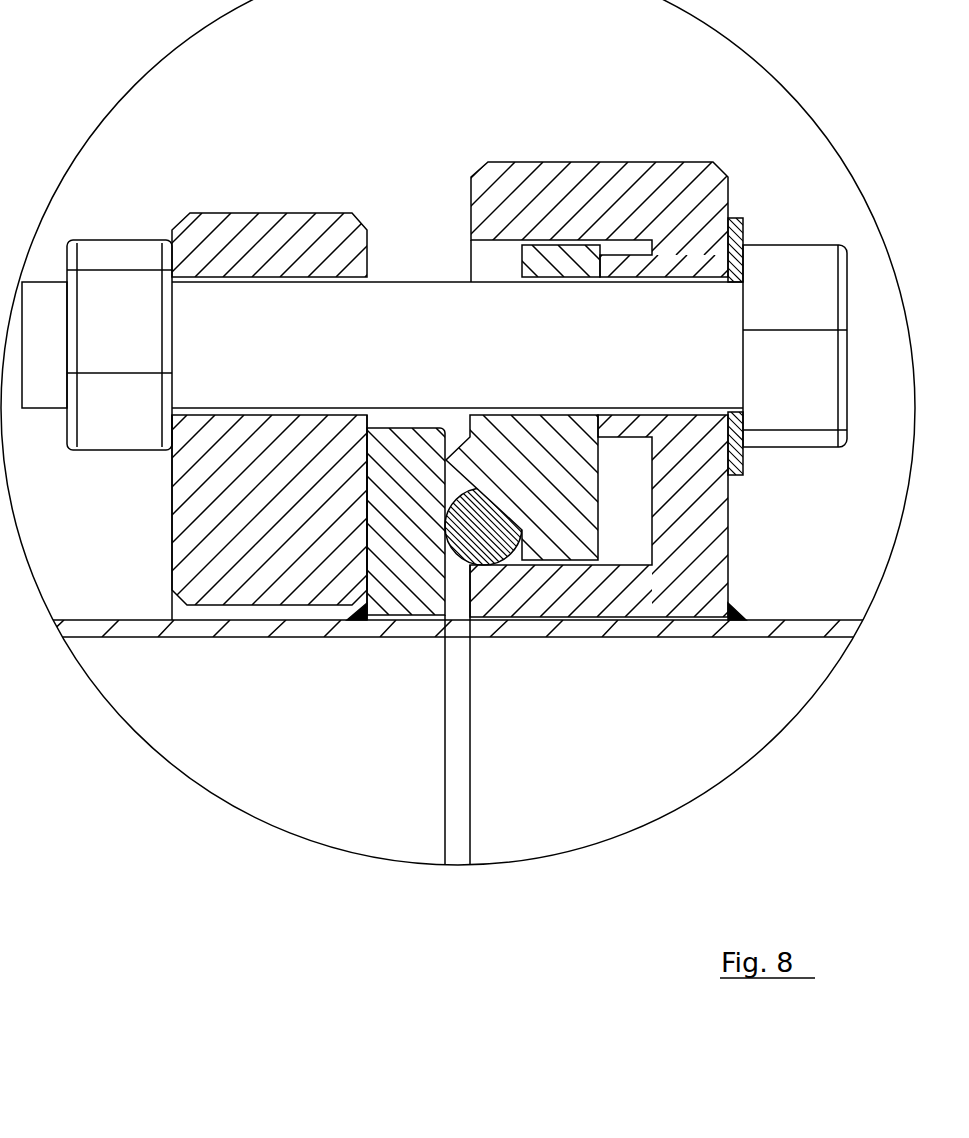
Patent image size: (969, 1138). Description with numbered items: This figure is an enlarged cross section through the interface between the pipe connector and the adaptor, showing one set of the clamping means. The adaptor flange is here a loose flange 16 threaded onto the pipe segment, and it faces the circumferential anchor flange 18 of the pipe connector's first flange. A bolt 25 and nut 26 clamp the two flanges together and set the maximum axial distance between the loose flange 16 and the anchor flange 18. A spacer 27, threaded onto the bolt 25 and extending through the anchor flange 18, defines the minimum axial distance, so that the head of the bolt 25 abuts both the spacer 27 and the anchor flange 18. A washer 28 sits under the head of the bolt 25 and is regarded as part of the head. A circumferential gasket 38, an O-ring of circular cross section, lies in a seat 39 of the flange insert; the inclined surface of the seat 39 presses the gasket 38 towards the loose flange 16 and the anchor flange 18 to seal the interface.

The loose flange 16 is at (210, 223).
The anchor flange 18 is at (550, 173).
The bolt 25 is at (810, 267).
The nut 26 is at (115, 288).
The spacer 27 is at (648, 263).
The washer 28 is at (740, 218).
The circumferential gasket 38 is at (488, 540).
The seat 39 is at (458, 490).